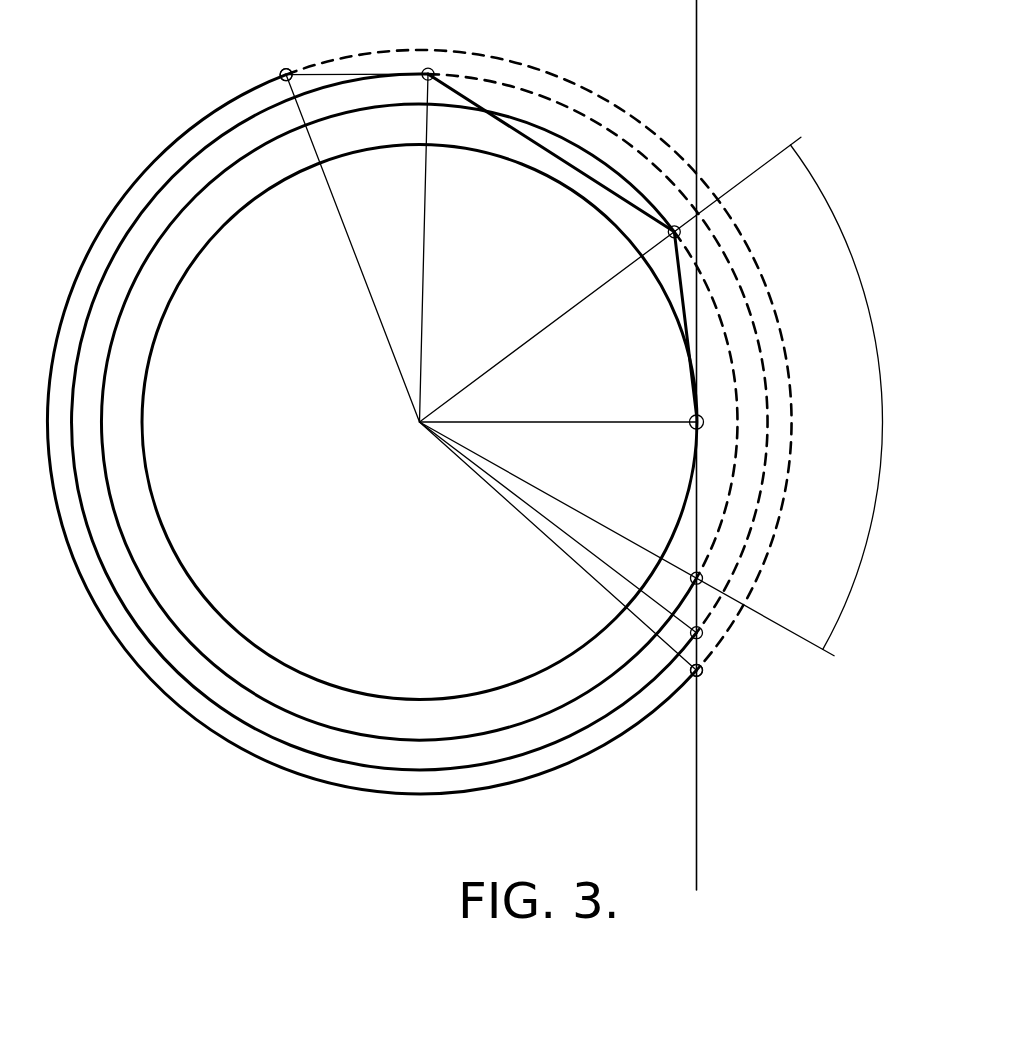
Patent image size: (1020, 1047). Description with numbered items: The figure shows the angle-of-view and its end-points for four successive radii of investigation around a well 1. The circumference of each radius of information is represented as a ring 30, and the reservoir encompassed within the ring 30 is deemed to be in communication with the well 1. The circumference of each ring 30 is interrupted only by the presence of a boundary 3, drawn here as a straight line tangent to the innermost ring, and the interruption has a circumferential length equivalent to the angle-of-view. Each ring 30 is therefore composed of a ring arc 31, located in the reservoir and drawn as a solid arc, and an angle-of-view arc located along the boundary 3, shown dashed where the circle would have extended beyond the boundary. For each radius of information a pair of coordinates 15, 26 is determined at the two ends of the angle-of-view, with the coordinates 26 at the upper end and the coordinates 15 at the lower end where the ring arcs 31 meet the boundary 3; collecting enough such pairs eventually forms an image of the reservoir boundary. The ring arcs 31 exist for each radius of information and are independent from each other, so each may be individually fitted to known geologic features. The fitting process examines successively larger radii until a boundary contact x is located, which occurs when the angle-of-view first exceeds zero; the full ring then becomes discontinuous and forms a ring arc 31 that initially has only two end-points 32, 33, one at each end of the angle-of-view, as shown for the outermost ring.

The well 1 is at (418, 423).
The boundary 3 is at (347, 73).
The coordinate (end-point of angle-of-view) 15 is at (703, 577).
The coordinate (end-point of angle-of-view) 26 is at (436, 70).
The ring 30 is at (152, 498).
The ring arc 31 is at (106, 218).
The end-point 32 is at (281, 73).
The end-point 33 is at (703, 669).
The boundary contact x is at (690, 420).